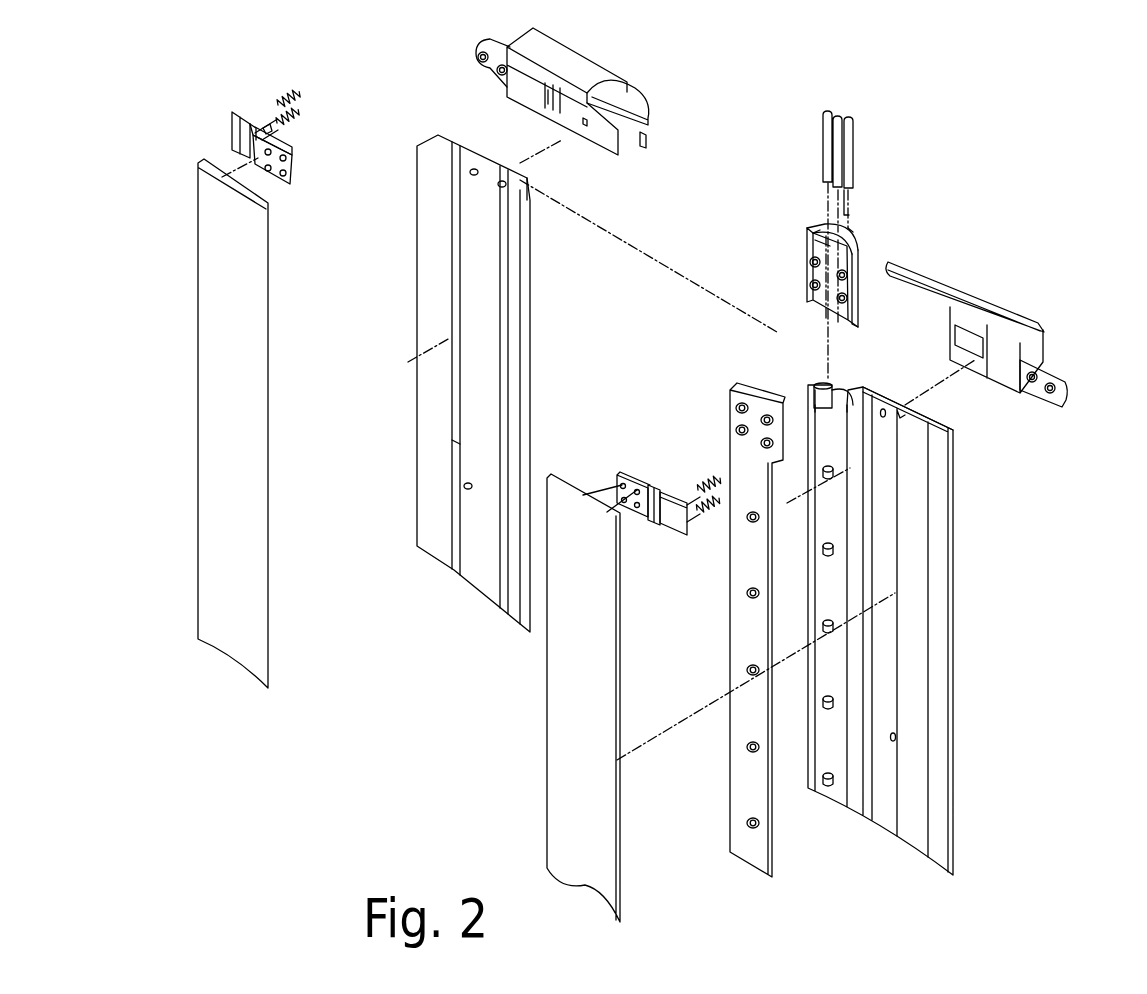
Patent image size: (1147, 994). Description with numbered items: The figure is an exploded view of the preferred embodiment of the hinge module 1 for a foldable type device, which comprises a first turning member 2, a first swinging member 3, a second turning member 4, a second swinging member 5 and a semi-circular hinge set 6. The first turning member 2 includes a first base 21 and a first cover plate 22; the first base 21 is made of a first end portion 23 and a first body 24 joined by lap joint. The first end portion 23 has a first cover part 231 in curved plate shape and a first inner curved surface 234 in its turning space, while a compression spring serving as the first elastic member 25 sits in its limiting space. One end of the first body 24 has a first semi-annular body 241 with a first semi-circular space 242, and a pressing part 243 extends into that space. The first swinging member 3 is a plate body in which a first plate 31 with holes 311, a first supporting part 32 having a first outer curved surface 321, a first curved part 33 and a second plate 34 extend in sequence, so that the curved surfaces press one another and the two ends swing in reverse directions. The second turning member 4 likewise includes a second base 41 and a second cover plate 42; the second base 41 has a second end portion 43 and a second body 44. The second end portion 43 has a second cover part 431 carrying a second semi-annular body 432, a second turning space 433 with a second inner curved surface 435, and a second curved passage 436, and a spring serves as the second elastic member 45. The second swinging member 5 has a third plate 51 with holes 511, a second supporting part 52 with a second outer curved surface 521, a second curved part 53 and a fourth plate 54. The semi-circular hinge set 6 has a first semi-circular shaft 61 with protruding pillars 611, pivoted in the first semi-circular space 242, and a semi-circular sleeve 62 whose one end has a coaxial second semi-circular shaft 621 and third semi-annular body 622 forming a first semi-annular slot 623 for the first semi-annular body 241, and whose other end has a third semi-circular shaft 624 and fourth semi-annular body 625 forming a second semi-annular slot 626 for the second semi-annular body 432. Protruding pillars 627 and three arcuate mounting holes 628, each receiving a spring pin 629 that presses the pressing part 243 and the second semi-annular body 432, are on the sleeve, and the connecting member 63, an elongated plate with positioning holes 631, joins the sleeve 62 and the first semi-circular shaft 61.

The hinge module 1 is at (1065, 136).
The first turning member 2 is at (975, 599).
The first base 21 is at (1100, 420).
The first cover plate 22 is at (608, 877).
The first end portion 23 is at (1012, 390).
The first cover part 231 is at (938, 275).
The first inner curved surface 234 is at (1013, 337).
The first body 24 is at (945, 462).
The first semi-annular body 241 is at (815, 410).
The first semi-circular space 242 is at (840, 393).
The pressing part 243 is at (845, 392).
The first elastic member 25 is at (713, 473).
The first swinging member 3 is at (673, 555).
The first plate 31 is at (627, 470).
The holes 311 is at (637, 510).
The first supporting part 32 is at (653, 488).
The first outer curved surface 321 is at (655, 497).
The first curved part 33 is at (667, 487).
The second plate 34 is at (677, 530).
The second turning member 4 is at (426, 683).
The second base 41 is at (446, 599).
The second cover plate 42 is at (252, 632).
The second end portion 43 is at (560, 53).
The second cover part 431 is at (633, 102).
The second semi-annular body 432 is at (648, 138).
The second turning space 433 is at (553, 95).
The second inner curved surface 435 is at (508, 126).
The second curved passage 436 is at (520, 88).
The second body 44 is at (430, 447).
The second elastic member 45 is at (287, 92).
The second swinging member 5 is at (303, 205).
The third plate 51 is at (293, 150).
The holes 511 is at (293, 174).
The second supporting part 52 is at (278, 137).
The second outer curved surface 521 is at (268, 130).
The second curved part 53 is at (258, 141).
The fourth plate 54 is at (233, 118).
The semi-circular hinge set 6 is at (707, 367).
The first semi-circular shaft 61 is at (832, 663).
The protruding pillars 611 is at (825, 788).
The semi-circular sleeve 62 is at (875, 225).
The second semi-circular shaft 621 is at (845, 317).
The third semi-annular body 622 is at (857, 320).
The first semi-annular slot 623 is at (810, 305).
The third semi-circular shaft 624 is at (817, 245).
The fourth semi-annular body 625 is at (860, 247).
The second semi-annular slot 626 is at (818, 232).
The protruding pillars 627 is at (842, 300).
The mounting holes 628 is at (852, 232).
The spring pin 629 is at (849, 152).
The connecting member 63 is at (752, 852).
The positioning holes 631 is at (752, 597).